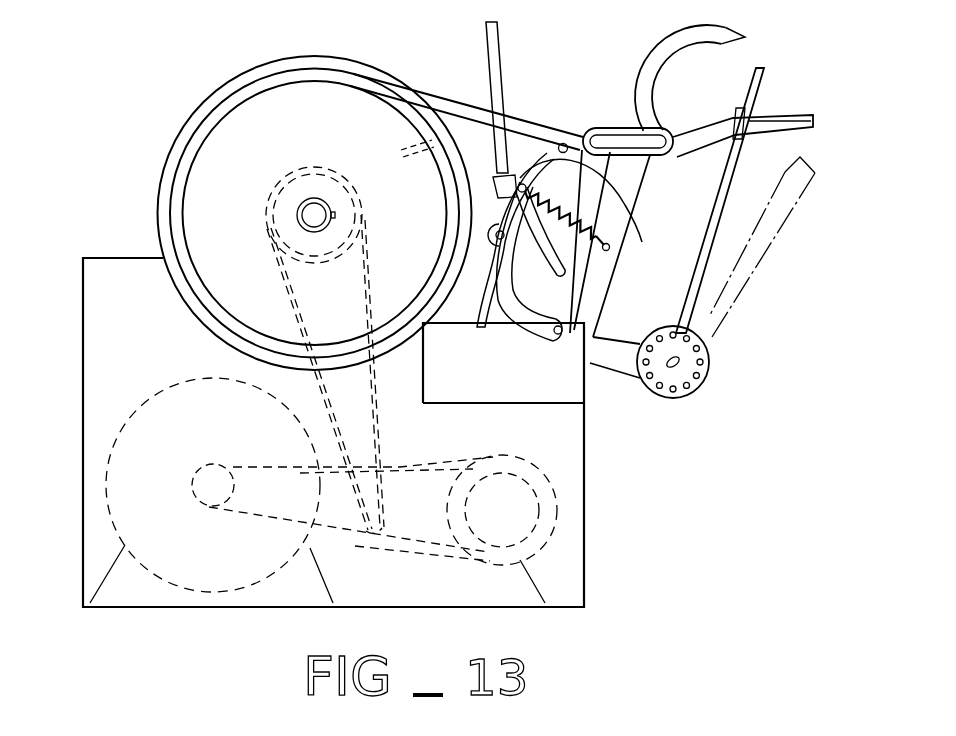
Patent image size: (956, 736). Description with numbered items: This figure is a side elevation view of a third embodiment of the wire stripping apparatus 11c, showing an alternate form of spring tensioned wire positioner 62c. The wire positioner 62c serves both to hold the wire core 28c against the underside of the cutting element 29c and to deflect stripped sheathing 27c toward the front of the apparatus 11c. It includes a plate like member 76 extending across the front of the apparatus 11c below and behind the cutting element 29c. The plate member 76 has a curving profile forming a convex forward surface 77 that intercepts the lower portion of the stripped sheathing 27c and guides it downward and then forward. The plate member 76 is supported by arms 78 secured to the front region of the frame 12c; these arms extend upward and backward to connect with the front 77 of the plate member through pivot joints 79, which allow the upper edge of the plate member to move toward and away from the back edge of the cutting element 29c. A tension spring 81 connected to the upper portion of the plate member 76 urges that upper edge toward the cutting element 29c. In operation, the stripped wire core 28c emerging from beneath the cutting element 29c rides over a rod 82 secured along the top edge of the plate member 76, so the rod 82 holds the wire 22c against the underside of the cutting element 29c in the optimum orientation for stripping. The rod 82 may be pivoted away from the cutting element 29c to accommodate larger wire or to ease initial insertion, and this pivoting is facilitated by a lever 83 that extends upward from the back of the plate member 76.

The apparatus 11c is at (644, 421).
The frame 12c is at (585, 516).
The wire 22c is at (700, 112).
The stripped sheathing 27c is at (583, 165).
The wire core 28c is at (437, 100).
The cutting element 29c is at (615, 120).
The spring tensioned wire positioner 62c is at (524, 145).
The plate like member 76 is at (470, 303).
The convex forward surface 77 is at (490, 303).
The arms 78 is at (518, 303).
The pivot joints 79 is at (496, 236).
The tension spring 81 is at (573, 211).
The rod 82 is at (564, 143).
The lever 83 is at (498, 40).